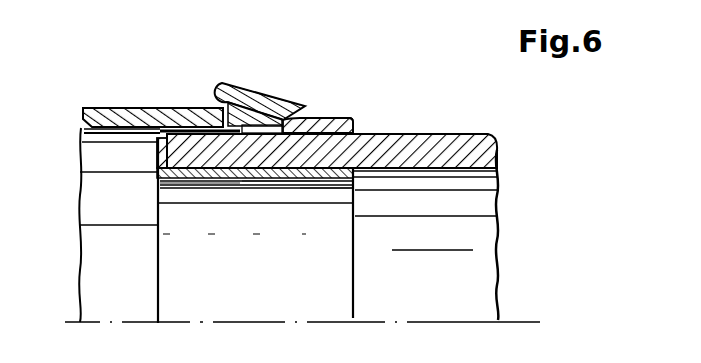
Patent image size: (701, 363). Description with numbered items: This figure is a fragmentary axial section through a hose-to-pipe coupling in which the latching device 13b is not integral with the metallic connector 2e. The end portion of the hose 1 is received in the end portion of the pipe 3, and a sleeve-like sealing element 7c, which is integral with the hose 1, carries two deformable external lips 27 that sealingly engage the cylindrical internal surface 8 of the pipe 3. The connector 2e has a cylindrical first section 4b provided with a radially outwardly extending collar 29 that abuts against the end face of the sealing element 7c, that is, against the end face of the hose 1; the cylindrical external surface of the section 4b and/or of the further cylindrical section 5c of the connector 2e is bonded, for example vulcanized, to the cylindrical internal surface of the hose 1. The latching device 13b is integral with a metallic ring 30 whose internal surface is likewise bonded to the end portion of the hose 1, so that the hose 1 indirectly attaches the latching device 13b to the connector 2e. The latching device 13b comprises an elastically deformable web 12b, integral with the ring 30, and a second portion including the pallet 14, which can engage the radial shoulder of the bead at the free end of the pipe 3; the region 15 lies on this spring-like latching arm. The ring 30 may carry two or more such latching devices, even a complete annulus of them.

The hose 1 is at (462, 128).
The pipe 3 is at (127, 106).
The cylindrical internal surface 8 is at (88, 140).
The collar 29 is at (157, 151).
The sleeve-like sealing element 7c is at (160, 173).
The deformable external lips 27 is at (190, 122).
The cylindrical first section 4b is at (187, 183).
The metallic connector 2e is at (278, 180).
The cylindrical section 5c is at (328, 188).
The pallet 14 is at (217, 101).
The latching device 13b is at (223, 80).
The spring arm 15 is at (267, 102).
The web 12b is at (297, 106).
The metallic ring 30 is at (343, 120).